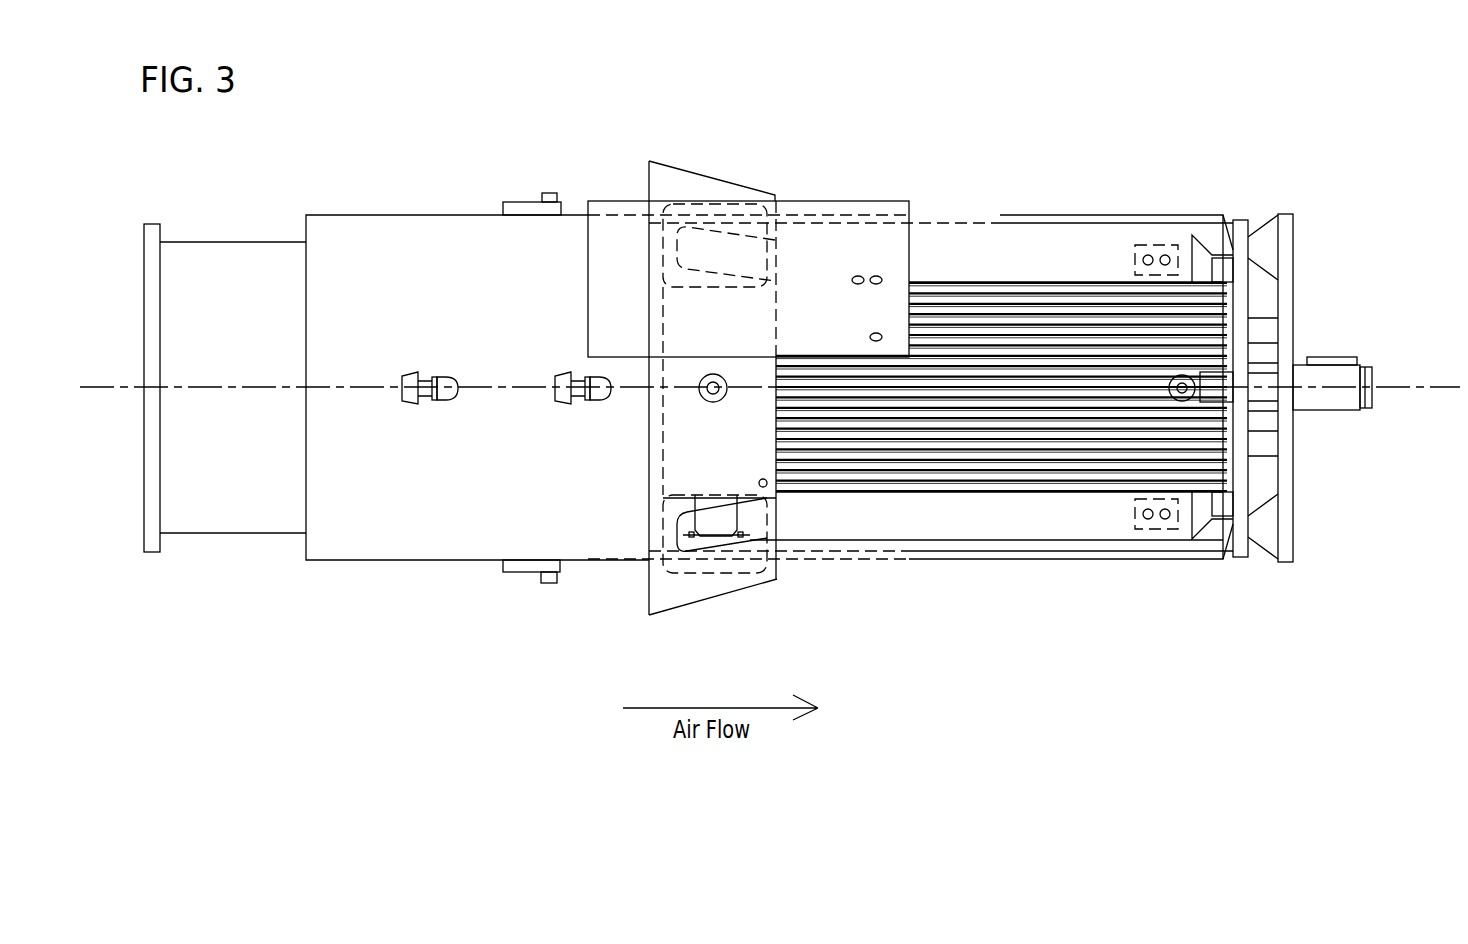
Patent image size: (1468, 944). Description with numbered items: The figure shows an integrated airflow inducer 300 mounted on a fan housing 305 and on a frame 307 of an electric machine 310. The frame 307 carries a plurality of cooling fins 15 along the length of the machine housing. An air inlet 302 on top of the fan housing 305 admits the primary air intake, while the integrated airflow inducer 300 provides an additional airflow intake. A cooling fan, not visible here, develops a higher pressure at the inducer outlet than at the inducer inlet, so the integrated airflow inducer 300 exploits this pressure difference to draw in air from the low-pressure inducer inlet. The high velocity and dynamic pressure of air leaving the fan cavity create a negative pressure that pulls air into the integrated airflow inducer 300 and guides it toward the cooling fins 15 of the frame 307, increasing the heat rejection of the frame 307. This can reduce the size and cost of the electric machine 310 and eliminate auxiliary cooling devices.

The cooling fins 15 is at (1025, 473).
The integrated airflow inducer 300 is at (702, 610).
The air inlet 302 is at (213, 533).
The fan housing 305 is at (408, 560).
The frame 307 is at (1117, 215).
The electric machine 310 is at (1027, 210).